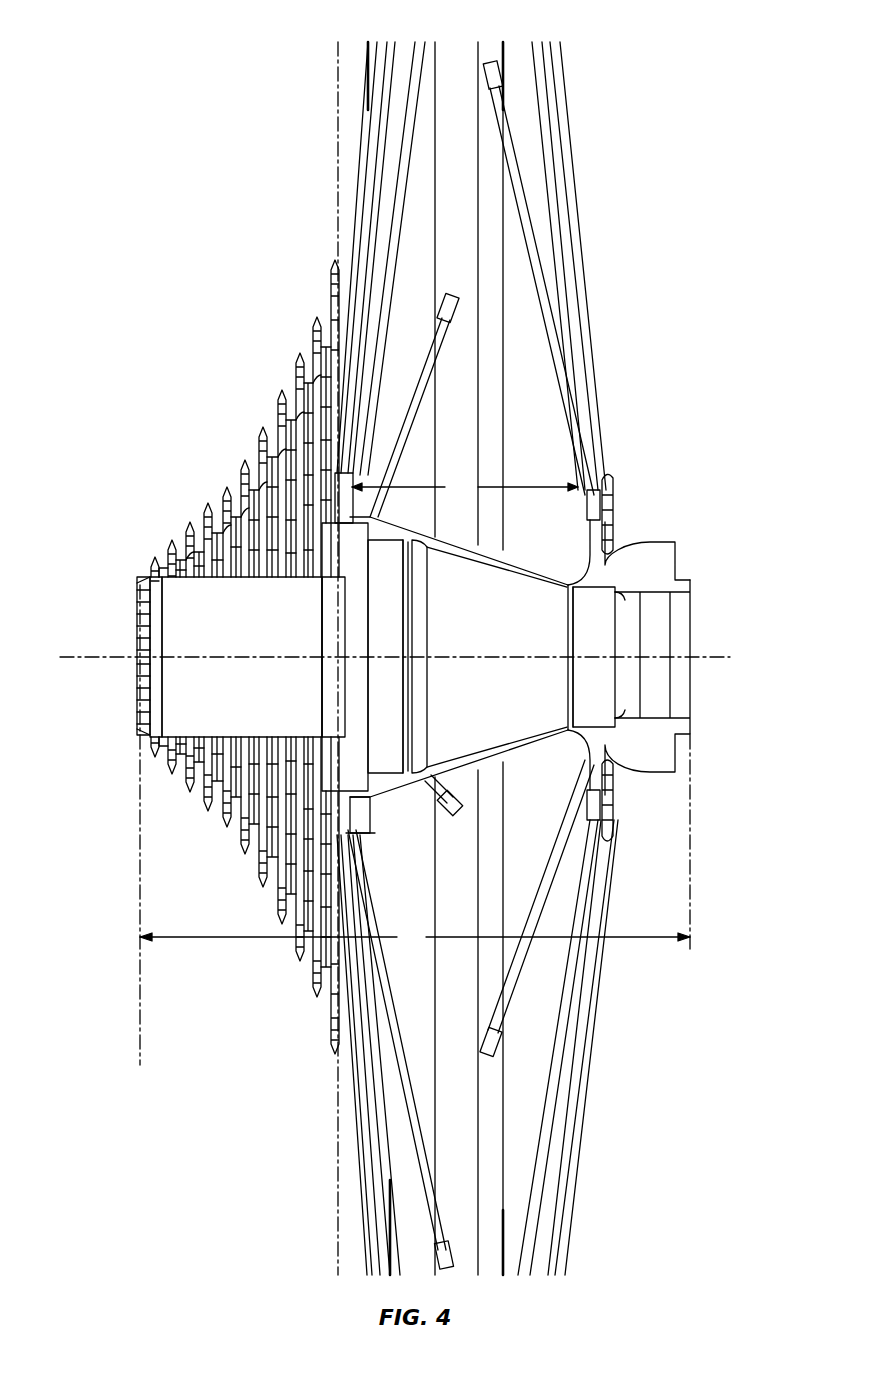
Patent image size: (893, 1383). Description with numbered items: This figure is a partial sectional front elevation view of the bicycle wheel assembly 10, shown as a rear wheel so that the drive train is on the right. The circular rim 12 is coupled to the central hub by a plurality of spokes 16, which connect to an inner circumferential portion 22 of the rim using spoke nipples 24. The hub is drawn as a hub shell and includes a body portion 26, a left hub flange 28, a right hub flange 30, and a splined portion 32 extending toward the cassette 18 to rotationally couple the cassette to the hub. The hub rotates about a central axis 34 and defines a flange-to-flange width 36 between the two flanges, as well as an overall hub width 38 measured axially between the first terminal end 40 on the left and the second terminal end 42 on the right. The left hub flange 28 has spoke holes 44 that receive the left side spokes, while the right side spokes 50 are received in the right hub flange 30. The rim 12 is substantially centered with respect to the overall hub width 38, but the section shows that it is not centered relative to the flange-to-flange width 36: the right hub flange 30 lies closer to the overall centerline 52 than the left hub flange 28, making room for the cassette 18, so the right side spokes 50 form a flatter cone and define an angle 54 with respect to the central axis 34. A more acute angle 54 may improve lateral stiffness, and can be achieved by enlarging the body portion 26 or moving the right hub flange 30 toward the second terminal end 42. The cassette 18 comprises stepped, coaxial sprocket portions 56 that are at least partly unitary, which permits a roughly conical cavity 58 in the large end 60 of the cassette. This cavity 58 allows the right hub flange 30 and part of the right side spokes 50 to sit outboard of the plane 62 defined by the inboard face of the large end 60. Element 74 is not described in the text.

The bicycle wheel assembly 10 is at (136, 246).
The circular rim 12 is at (488, 1110).
The spokes 16 is at (652, 264).
The cassette 18 is at (186, 467).
The inner circumferential portion 22 is at (492, 440).
The spoke nipples 24 is at (487, 74).
The body portion 26 is at (523, 575).
The left hub flange 28 is at (611, 547).
The right hub flange 30 is at (362, 823).
The splined portion 32 is at (229, 690).
The central axis 34 is at (730, 657).
The flange-to-flange width 36 is at (465, 487).
The overall hub width 38 is at (415, 842).
The first terminal end 40 is at (714, 604).
The second terminal end 42 is at (118, 711).
The spoke holes 44 is at (606, 797).
The right side spokes 50 is at (362, 222).
The overall centerline 52 is at (426, 29).
The angle 54 is at (383, 343).
The sprocket portions 56 is at (237, 870).
The cavity 58 is at (271, 540).
The large end 60 is at (397, 270).
The plane 62 is at (338, 153).
The forward spoke mount 74 is at (550, 546).